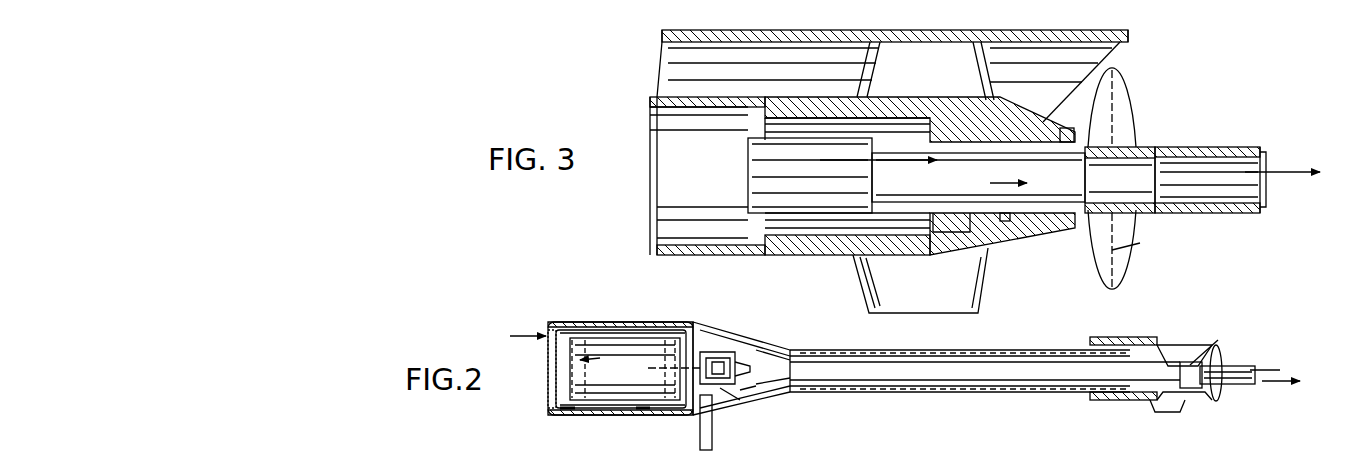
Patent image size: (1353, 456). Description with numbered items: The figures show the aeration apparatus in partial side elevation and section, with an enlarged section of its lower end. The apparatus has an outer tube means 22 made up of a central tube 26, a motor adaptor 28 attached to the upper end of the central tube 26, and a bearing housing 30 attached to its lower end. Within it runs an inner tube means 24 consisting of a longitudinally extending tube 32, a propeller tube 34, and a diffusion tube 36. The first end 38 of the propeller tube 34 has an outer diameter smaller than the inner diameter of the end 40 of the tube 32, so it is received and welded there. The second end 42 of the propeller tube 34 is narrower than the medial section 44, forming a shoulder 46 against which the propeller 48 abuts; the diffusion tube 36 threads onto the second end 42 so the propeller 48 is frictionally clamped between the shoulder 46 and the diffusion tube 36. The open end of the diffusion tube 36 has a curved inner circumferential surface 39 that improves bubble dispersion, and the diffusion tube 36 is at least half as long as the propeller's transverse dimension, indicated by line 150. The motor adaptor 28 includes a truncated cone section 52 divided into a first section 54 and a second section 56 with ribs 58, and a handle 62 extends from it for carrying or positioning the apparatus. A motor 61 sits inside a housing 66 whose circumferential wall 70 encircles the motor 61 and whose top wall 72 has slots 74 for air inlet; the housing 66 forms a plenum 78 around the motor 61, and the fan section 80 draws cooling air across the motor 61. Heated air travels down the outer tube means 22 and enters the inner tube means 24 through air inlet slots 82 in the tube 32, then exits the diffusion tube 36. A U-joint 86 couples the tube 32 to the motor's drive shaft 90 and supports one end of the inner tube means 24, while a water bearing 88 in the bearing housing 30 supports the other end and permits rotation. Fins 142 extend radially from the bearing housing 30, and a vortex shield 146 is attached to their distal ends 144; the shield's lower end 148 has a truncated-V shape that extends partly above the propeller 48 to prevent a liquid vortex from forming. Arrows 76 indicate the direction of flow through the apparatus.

In FIG. 2, the outer tube means 22 is at (832, 348).
In FIG. 2, the inner tube means 24 is at (1012, 372).
In FIG. 3, the central tube 26 is at (740, 256).
In FIG. 2, the central tube 26 is at (1072, 392).
In FIG. 2, the motor adaptor 28 is at (770, 350).
In FIG. 3, the bearing housing 30 is at (834, 255).
In FIG. 2, the bearing housing 30 is at (1158, 394).
In FIG. 3, the tube 32 is at (758, 188).
In FIG. 2, the tube 32 is at (930, 368).
In FIG. 3, the propeller tube 34 is at (1060, 178).
In FIG. 2, the propeller tube 34 is at (1194, 388).
In FIG. 3, the diffusion tube 36 is at (1218, 147).
In FIG. 2, the diffusion tube 36 is at (1236, 366).
In FIG. 3, the first end 38 is at (905, 190).
In FIG. 3, the curved inner circumferential surface 39 is at (1262, 168).
In FIG. 3, the end 40 is at (872, 135).
In FIG. 3, the second end 42 is at (1142, 148).
In FIG. 3, the medial section 44 is at (1065, 128).
In FIG. 3, the shoulder 46 is at (1098, 148).
In FIG. 3, the propeller 48 is at (1122, 284).
In FIG. 2, the propeller 48 is at (1220, 392).
In FIG. 2, the truncated cone section 52 is at (747, 394).
In FIG. 2, the first section 54 is at (764, 388).
In FIG. 2, the second section 56 is at (710, 332).
In FIG. 2, the ribs 58 is at (728, 398).
In FIG. 2, the motor 61 is at (638, 330).
In FIG. 2, the handle 62 is at (712, 430).
In FIG. 2, the housing 66 is at (604, 414).
In FIG. 2, the circumferential wall 70 is at (638, 414).
In FIG. 2, the top wall 72 is at (552, 398).
In FIG. 2, the slots 74 is at (550, 360).
In FIG. 2, the flow direction 76 is at (524, 333).
In FIG. 2, the plenum 78 is at (660, 333).
In FIG. 2, the fan section 80 is at (570, 412).
In FIG. 2, the air inlet slots 82 is at (800, 392).
In FIG. 2, the U-joint 86 is at (732, 352).
In FIG. 3, the water bearing 88 is at (1005, 222).
In FIG. 2, the drive shaft 90 is at (687, 368).
In FIG. 3, the fins 142 is at (936, 75).
In FIG. 2, the fins 142 is at (1178, 345).
In FIG. 3, the distal end 144 is at (961, 40).
In FIG. 2, the distal end 144 is at (1188, 410).
In FIG. 3, the vortex shield 146 is at (664, 35).
In FIG. 2, the vortex shield 146 is at (1118, 337).
In FIG. 3, the lower end 148 is at (1124, 42).
In FIG. 2, the lower end 148 is at (1218, 340).
In FIG. 3, the transverse dimension line 150 is at (1140, 242).